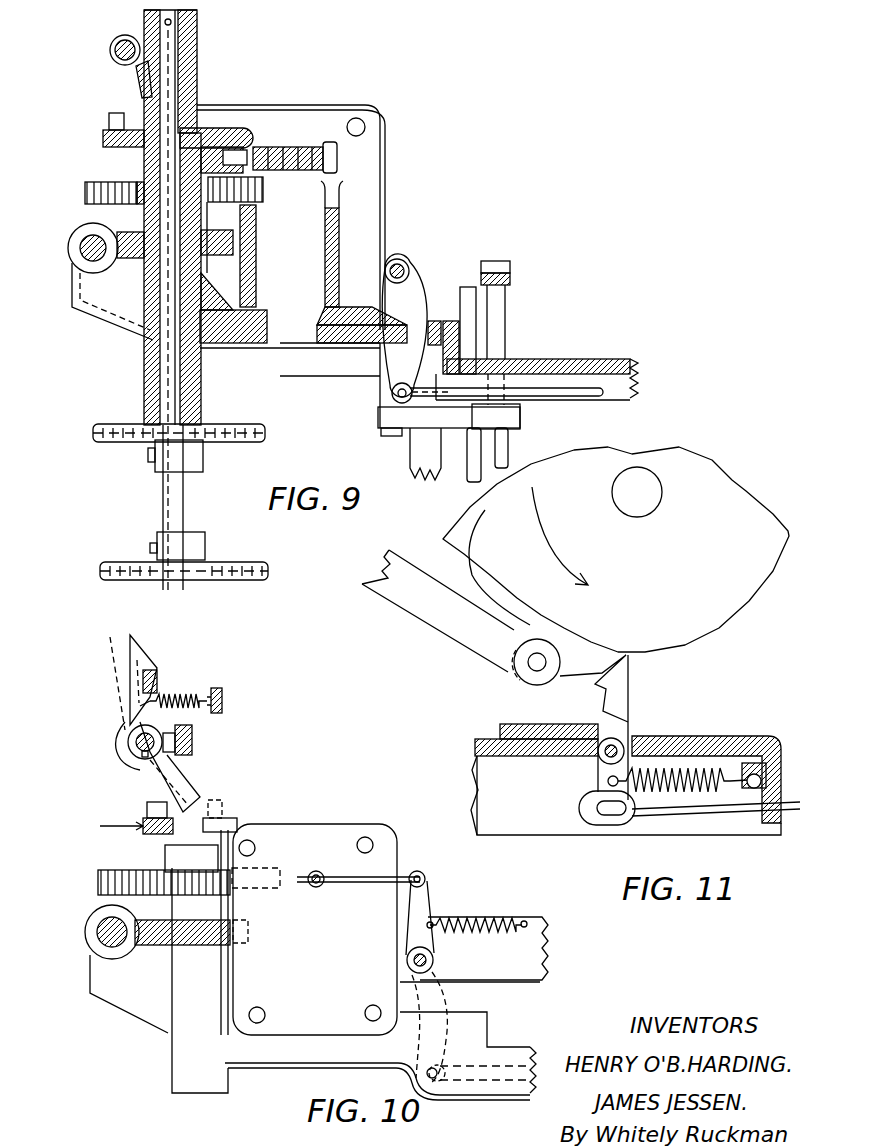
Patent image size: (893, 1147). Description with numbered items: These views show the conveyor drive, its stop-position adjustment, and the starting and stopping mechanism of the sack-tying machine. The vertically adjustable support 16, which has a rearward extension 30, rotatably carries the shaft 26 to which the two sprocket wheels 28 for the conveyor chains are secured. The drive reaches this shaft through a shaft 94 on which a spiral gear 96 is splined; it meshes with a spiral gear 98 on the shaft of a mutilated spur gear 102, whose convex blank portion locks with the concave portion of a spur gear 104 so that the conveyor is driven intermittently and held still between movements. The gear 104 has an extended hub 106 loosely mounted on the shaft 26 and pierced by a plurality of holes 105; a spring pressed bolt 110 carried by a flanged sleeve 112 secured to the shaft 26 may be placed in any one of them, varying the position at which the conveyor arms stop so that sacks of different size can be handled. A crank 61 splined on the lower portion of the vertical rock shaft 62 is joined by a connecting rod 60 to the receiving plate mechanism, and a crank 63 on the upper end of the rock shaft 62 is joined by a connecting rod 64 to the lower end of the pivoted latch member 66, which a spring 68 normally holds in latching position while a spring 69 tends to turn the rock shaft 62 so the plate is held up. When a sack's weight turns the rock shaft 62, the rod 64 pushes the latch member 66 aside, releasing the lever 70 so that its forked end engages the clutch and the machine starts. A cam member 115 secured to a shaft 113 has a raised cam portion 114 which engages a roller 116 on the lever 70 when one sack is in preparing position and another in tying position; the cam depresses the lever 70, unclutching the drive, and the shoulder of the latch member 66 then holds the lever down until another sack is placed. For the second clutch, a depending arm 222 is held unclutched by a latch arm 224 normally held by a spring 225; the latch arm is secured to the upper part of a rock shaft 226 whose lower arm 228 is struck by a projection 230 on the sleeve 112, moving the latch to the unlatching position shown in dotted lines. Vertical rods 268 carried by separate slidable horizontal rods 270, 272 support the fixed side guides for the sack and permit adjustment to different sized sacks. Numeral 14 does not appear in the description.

In FIG. 9, the frame plate 14 is at (326, 248).
In FIG. 10, the frame plate 14 is at (295, 1018).
In FIG. 9, the support 16 is at (357, 343).
In FIG. 10, the support 16 is at (183, 1023).
In FIG. 9, the shaft 26 is at (170, 383).
In FIG. 9, the sprocket wheels 28 is at (115, 562).
In FIG. 9, the rearward extension 30 is at (612, 361).
In FIG. 9, the connecting rod 60 is at (560, 386).
In FIG. 10, the connecting rod 60 is at (537, 1065).
In FIG. 9, the crank 61 is at (424, 304).
In FIG. 10, the crank 61 is at (443, 998).
In FIG. 9, the rock shaft 62 is at (407, 266).
In FIG. 10, the rock shaft 62 is at (434, 958).
In FIG. 10, the crank 63 is at (422, 907).
In FIG. 10, the connecting rod 64 is at (367, 877).
In FIG. 11, the connecting rod 64 is at (738, 815).
In FIG. 10, the latch member 66 is at (308, 890).
In FIG. 11, the latch member 66 is at (620, 709).
In FIG. 11, the spring 68 is at (693, 775).
In FIG. 10, the spring 69 is at (488, 920).
In FIG. 11, the lever 70 is at (421, 608).
In FIG. 9, the shaft 94 is at (80, 240).
In FIG. 10, the shaft 94 is at (100, 925).
In FIG. 9, the spiral gear 96 is at (70, 256).
In FIG. 10, the spiral gear 96 is at (95, 940).
In FIG. 9, the spiral gear 98 is at (150, 263).
In FIG. 10, the spiral gear 98 is at (190, 947).
In FIG. 9, the mutilated spur gear 102 is at (264, 190).
In FIG. 10, the mutilated spur gear 102 is at (100, 880).
In FIG. 9, the spur gear 104 is at (130, 193).
In FIG. 10, the spur gear 104 is at (185, 873).
In FIG. 9, the holes 105 is at (238, 140).
In FIG. 9, the extended hub 106 is at (144, 162).
In FIG. 10, the extended hub 106 is at (222, 832).
In FIG. 9, the spring pressed bolt 110 is at (245, 160).
In FIG. 9, the flanged sleeve 112 is at (198, 125).
In FIG. 11, the shaft 113 is at (645, 489).
In FIG. 11, the raised cam portion 114 is at (464, 554).
In FIG. 11, the cam member 115 is at (706, 619).
In FIG. 11, the roller 116 is at (527, 688).
In FIG. 10, the depending arm 222 is at (160, 680).
In FIG. 10, the latch arm 224 is at (140, 655).
In FIG. 10, the spring 225 is at (190, 690).
In FIG. 9, the rock shaft 226 is at (109, 50).
In FIG. 10, the rock shaft 226 is at (130, 741).
In FIG. 9, the arm 228 is at (138, 80).
In FIG. 10, the arm 228 is at (162, 782).
In FIG. 9, the projection 230 is at (108, 119).
In FIG. 10, the projection 230 is at (145, 810).
In FIG. 9, the vertical rods 268 is at (512, 275).
In FIG. 9, the slidable horizontal rod 270 is at (508, 306).
In FIG. 9, the slidable horizontal rod 272 is at (476, 333).